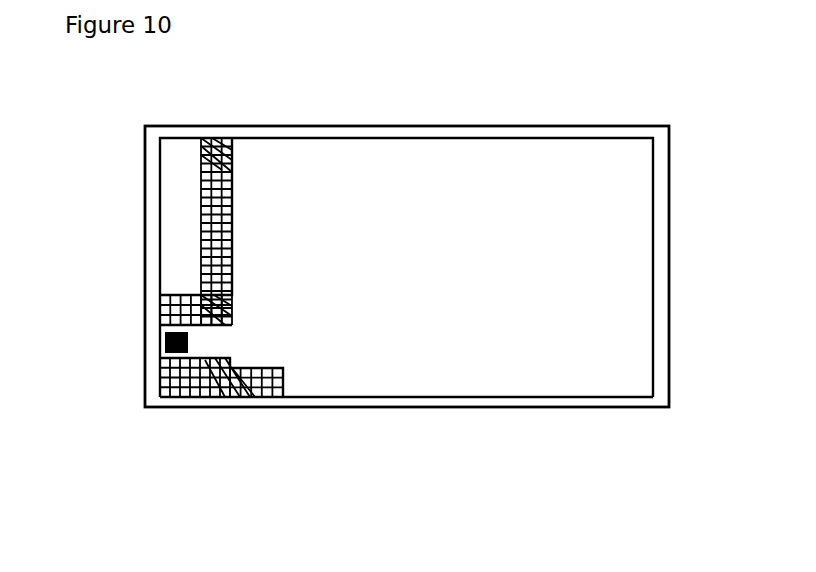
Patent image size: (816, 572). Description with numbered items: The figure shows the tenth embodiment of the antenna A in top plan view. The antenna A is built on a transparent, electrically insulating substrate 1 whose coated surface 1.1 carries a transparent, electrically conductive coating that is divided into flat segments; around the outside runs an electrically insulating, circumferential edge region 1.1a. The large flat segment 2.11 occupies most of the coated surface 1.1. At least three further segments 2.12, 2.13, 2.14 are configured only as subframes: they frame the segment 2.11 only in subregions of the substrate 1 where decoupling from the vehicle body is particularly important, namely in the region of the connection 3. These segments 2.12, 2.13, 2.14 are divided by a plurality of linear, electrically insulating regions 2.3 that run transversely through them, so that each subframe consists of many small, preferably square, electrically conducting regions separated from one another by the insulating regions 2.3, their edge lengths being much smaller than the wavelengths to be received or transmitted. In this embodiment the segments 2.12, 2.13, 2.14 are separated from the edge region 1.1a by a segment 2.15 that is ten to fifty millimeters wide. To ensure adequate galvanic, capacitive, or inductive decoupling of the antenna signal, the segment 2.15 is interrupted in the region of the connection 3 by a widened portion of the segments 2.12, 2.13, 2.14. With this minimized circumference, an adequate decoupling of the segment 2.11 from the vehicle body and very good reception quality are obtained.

The antenna A is at (414, 122).
The transparent, electrically insulating substrate 1 is at (584, 412).
The coated surface of the transparent, electrically insulating substrate 1.1 is at (495, 445).
The electrically insulating, circumferential edge region 1.1a is at (467, 401).
The flat segment 2.11 is at (308, 177).
The flat segment 2.15 is at (185, 220).
The divided flat segment 2.14 is at (200, 262).
The linear, electrically insulating region 2.3 is at (200, 184).
The divided flat segment 2.13 is at (205, 292).
The divided flat segment 2.12 is at (178, 300).
The capacitive connection or galvanic connection 3 is at (163, 350).